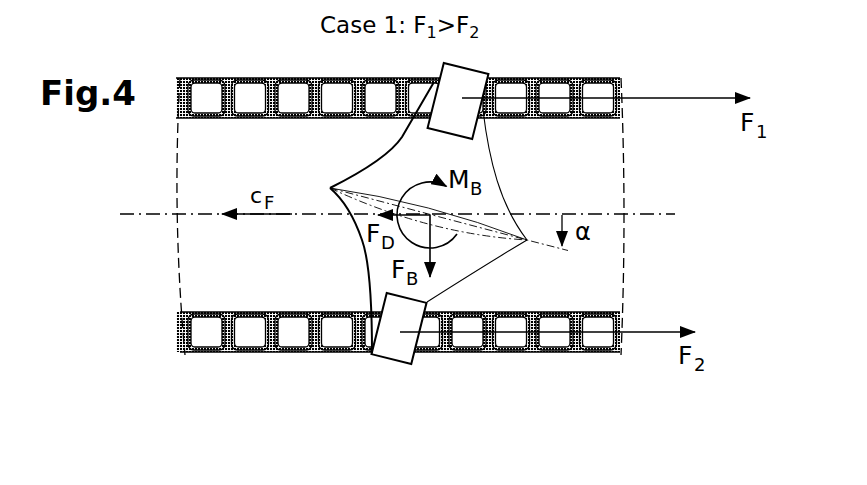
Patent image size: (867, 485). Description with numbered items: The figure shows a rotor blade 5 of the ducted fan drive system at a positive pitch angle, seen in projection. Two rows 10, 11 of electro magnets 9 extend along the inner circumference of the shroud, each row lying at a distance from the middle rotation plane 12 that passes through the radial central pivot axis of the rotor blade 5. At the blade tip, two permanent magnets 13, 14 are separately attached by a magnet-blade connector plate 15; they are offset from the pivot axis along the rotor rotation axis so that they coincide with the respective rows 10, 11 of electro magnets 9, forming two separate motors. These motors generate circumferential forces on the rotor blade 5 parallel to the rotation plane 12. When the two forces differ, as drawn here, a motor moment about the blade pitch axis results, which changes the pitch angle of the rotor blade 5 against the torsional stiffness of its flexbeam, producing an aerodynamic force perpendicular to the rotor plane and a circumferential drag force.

The rotor blade 5 is at (398, 156).
The electro magnets 9 is at (337, 92).
The row 10 is at (600, 92).
The row 11 is at (553, 343).
The middle rotation plane 12 is at (653, 214).
The permanent magnet 13 is at (465, 84).
The permanent magnet 14 is at (392, 351).
The magnet-blade connector plate 15 is at (482, 157).